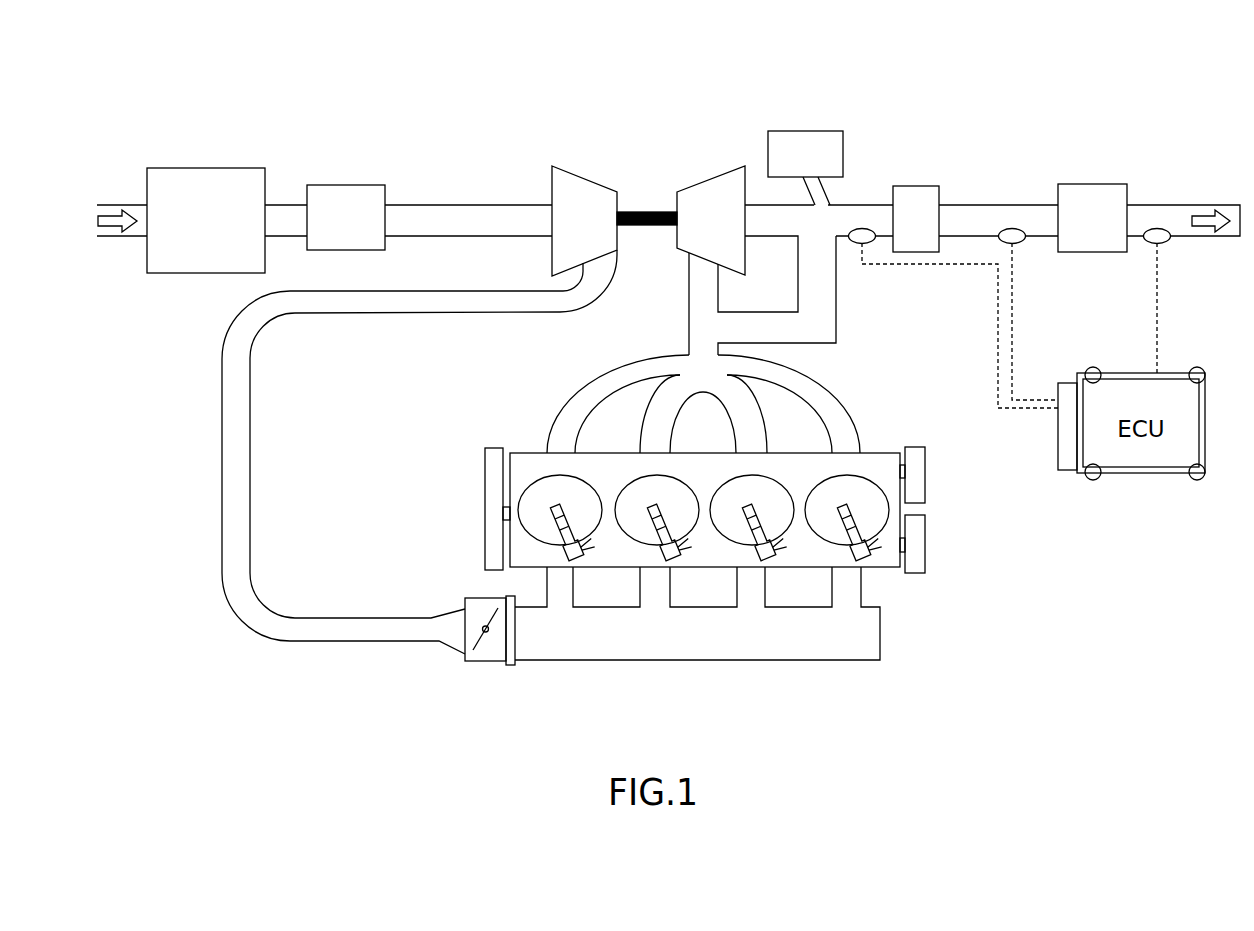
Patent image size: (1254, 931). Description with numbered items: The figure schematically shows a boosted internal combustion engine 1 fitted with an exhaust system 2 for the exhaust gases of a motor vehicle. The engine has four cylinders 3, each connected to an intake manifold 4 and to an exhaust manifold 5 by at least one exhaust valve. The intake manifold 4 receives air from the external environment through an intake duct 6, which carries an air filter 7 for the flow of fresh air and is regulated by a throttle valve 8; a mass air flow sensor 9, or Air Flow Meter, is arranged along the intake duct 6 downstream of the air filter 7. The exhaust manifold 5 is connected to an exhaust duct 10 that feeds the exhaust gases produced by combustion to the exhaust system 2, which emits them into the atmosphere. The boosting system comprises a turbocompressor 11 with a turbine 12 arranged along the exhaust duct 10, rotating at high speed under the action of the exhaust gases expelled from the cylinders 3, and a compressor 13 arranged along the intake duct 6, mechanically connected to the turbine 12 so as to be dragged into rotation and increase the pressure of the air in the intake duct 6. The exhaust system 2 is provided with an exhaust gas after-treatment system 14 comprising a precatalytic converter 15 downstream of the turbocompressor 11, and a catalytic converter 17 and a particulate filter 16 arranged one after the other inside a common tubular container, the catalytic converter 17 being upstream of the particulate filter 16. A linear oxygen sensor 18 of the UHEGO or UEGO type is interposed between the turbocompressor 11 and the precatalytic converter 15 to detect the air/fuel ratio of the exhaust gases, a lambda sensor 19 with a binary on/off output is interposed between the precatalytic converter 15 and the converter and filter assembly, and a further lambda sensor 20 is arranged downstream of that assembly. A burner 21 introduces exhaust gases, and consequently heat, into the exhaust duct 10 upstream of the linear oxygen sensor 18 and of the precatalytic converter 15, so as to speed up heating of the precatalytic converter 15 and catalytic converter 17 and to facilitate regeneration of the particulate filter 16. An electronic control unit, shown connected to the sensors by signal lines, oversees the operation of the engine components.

The boosted internal combustion engine 1 is at (277, 129).
The exhaust system 2 is at (913, 143).
The cylinders 3 is at (703, 518).
The intake manifold 4 is at (697, 613).
The exhaust manifold 5 is at (703, 344).
The intake duct 6 is at (222, 357).
The air filter 7 is at (206, 220).
The throttle valve 8 is at (485, 668).
The mass air flow sensor 9 is at (346, 217).
The exhaust duct 10 is at (770, 212).
The turbocompressor 11 is at (648, 179).
The turbine 12 is at (703, 190).
The compressor 13 is at (573, 178).
The exhaust gas after-treatment system 14 is at (1010, 185).
The precatalytic converter 15 is at (916, 219).
The particulate filter 16 is at (1092, 218).
The catalytic converter 17 is at (1092, 218).
The linear oxygen sensor 18 is at (858, 246).
The lambda sensor 19 is at (1015, 246).
The lambda sensor 20 is at (1160, 250).
The burner 21 is at (805, 168).